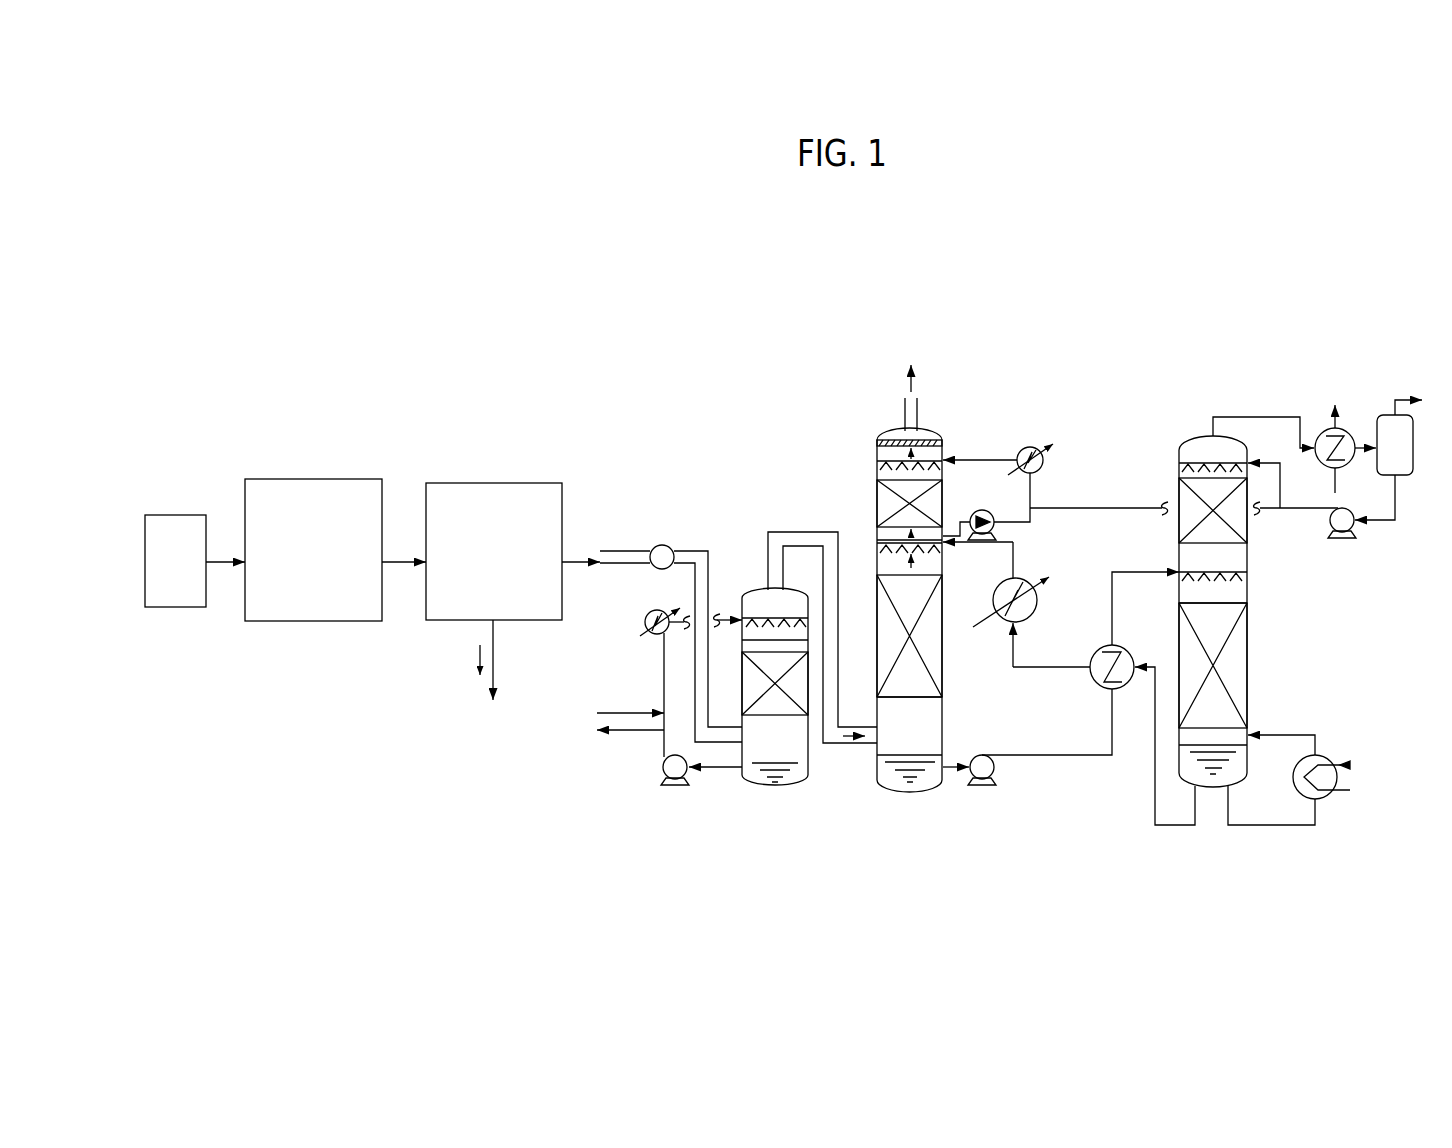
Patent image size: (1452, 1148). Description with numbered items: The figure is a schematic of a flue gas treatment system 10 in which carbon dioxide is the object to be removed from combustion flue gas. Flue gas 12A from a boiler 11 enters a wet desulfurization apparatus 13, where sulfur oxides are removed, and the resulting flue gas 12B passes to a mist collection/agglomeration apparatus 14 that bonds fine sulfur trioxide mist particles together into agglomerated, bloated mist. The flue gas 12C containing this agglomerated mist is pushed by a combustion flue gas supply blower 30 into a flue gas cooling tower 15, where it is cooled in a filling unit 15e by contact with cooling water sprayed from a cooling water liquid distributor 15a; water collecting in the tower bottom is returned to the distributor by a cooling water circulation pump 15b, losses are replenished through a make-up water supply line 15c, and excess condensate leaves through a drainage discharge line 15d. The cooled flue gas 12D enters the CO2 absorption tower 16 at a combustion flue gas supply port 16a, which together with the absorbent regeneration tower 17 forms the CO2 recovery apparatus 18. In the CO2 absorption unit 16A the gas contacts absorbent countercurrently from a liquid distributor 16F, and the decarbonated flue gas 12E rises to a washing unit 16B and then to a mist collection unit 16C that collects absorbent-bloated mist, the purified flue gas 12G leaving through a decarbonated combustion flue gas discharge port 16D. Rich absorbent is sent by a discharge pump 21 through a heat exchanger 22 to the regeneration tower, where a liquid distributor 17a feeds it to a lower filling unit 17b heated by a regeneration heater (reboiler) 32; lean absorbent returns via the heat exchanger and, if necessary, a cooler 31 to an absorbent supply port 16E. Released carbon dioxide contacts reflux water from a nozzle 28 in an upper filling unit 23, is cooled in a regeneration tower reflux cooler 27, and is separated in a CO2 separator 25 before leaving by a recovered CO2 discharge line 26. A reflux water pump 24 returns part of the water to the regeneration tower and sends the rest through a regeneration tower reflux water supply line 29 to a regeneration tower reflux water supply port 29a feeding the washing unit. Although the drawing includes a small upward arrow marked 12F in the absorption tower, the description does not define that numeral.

The flue gas treatment system 10 is at (680, 350).
The boiler 11 is at (190, 514).
The flue gas 12A is at (231, 573).
The flue gas 12B is at (411, 573).
The flue gas 12C is at (592, 573).
The flue gas 12D is at (852, 747).
The flue gas 12E is at (940, 622).
The flue gas after washing 12F is at (900, 454).
The purified flue gas 12G is at (918, 386).
The wet desulfurization apparatus 13 is at (344, 479).
The mist collection/agglomeration apparatus 14 is at (523, 483).
The flue gas cooling tower 15 is at (707, 638).
The cooling water liquid distributor 15a is at (812, 634).
The cooling water circulation pump 15b is at (660, 778).
The make-up water supply line 15c is at (628, 713).
The drainage discharge line 15d is at (630, 732).
The filling unit 15e is at (752, 683).
The CO2 absorption tower 16 is at (948, 582).
The CO2 absorption unit 16A is at (935, 665).
The washing unit 16B is at (933, 503).
The mist collection unit 16C is at (928, 440).
The decarbonated combustion flue gas discharge port 16D is at (905, 413).
The absorbent supply port 16E is at (950, 548).
The liquid distributor 16F is at (902, 555).
The combustion flue gas supply port 16a is at (875, 748).
The absorbent regeneration tower 17 is at (1224, 559).
The liquid distributor 17a is at (1238, 580).
The lower filling unit 17b is at (1235, 658).
The CO2 recovery apparatus 18 is at (1058, 338).
The discharge pump 21 is at (975, 786).
The heat exchanger 22 is at (1142, 698).
The upper filling unit 23 is at (1238, 520).
The reflux water pump 24 is at (1330, 527).
The CO2 separator 25 is at (1385, 412).
The recovered CO2 discharge line 26 is at (1408, 398).
The regeneration tower reflux cooler 27 is at (1345, 430).
The nozzle 28 is at (1200, 462).
The regeneration tower reflux water supply line 29 is at (1128, 507).
The regeneration tower reflux water supply port 29a is at (950, 448).
The combustion flue gas supply blower 30 is at (662, 544).
The cooler 31 is at (1033, 613).
The regeneration heater (reboiler) 32 is at (1337, 792).